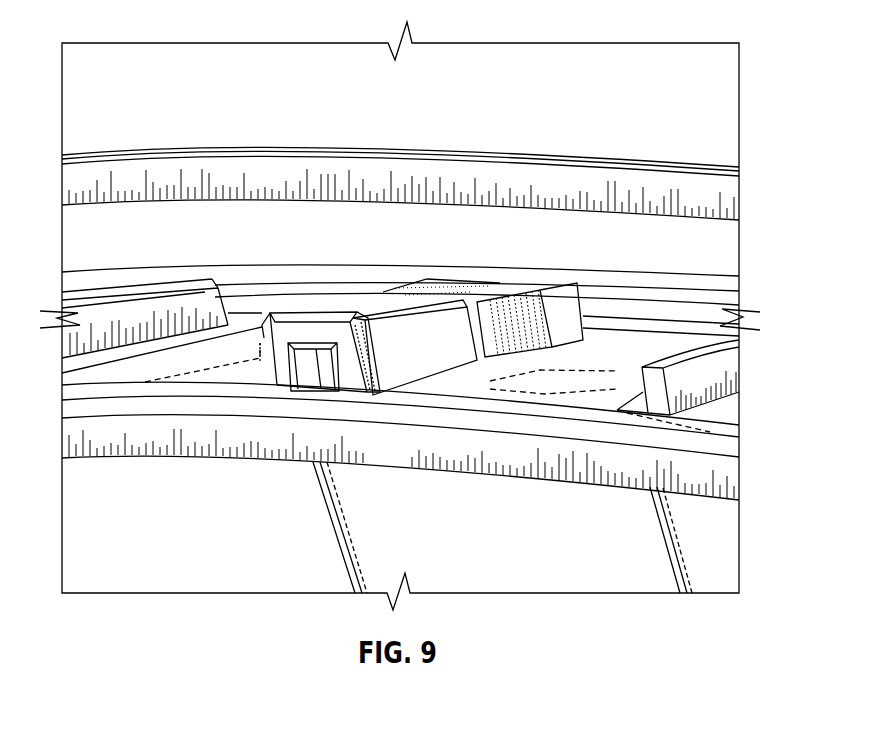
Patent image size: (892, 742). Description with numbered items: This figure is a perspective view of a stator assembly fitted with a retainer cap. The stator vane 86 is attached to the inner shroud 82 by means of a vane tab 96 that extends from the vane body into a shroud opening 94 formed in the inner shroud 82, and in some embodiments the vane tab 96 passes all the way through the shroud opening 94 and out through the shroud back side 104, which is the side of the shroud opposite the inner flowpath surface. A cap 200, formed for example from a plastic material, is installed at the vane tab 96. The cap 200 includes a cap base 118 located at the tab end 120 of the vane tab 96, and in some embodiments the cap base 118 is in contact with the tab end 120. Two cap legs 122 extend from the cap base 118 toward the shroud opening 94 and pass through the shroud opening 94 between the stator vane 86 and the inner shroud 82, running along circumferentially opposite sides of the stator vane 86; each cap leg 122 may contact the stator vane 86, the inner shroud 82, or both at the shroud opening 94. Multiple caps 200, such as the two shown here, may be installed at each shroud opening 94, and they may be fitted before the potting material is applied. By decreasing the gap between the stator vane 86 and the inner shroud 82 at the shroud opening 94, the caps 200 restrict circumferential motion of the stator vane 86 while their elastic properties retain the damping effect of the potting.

The inner shroud 82 is at (717, 470).
The stator vane 86 is at (525, 578).
The shroud opening 94 is at (403, 359).
The vane tab 96 is at (367, 320).
The shroud back side 104 is at (637, 347).
The cap base 118 is at (302, 322).
The tab end 120 is at (425, 290).
The cap leg 122 is at (272, 375).
The cap 200 is at (262, 325).